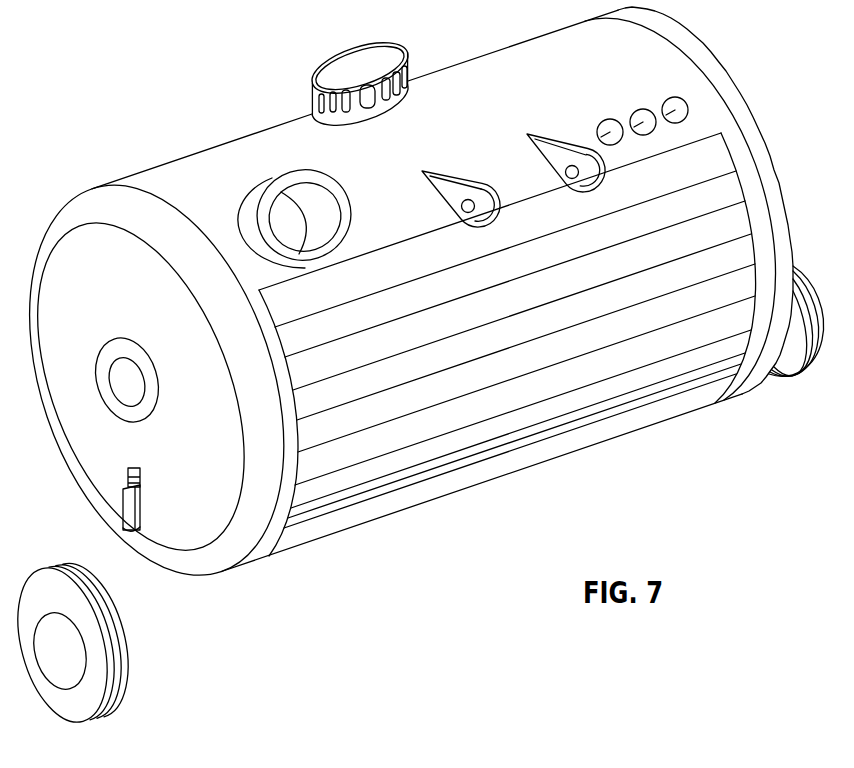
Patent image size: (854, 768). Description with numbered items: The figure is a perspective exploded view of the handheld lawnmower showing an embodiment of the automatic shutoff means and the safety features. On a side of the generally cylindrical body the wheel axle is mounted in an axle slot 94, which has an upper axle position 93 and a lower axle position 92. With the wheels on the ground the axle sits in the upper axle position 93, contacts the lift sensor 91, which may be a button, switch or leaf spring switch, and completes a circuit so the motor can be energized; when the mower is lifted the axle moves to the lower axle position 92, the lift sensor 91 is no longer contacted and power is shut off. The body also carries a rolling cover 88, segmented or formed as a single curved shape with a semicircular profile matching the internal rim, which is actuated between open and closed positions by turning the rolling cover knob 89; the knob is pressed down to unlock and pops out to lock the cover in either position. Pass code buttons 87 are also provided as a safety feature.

The pass code buttons 87 is at (665, 105).
The rolling cover 88 is at (337, 488).
The rolling cover knob 89 is at (125, 380).
The lift sensor 91 is at (138, 482).
The lower axle position 92 is at (130, 530).
The upper axle position 93 is at (124, 491).
The axle slot 94 is at (106, 531).